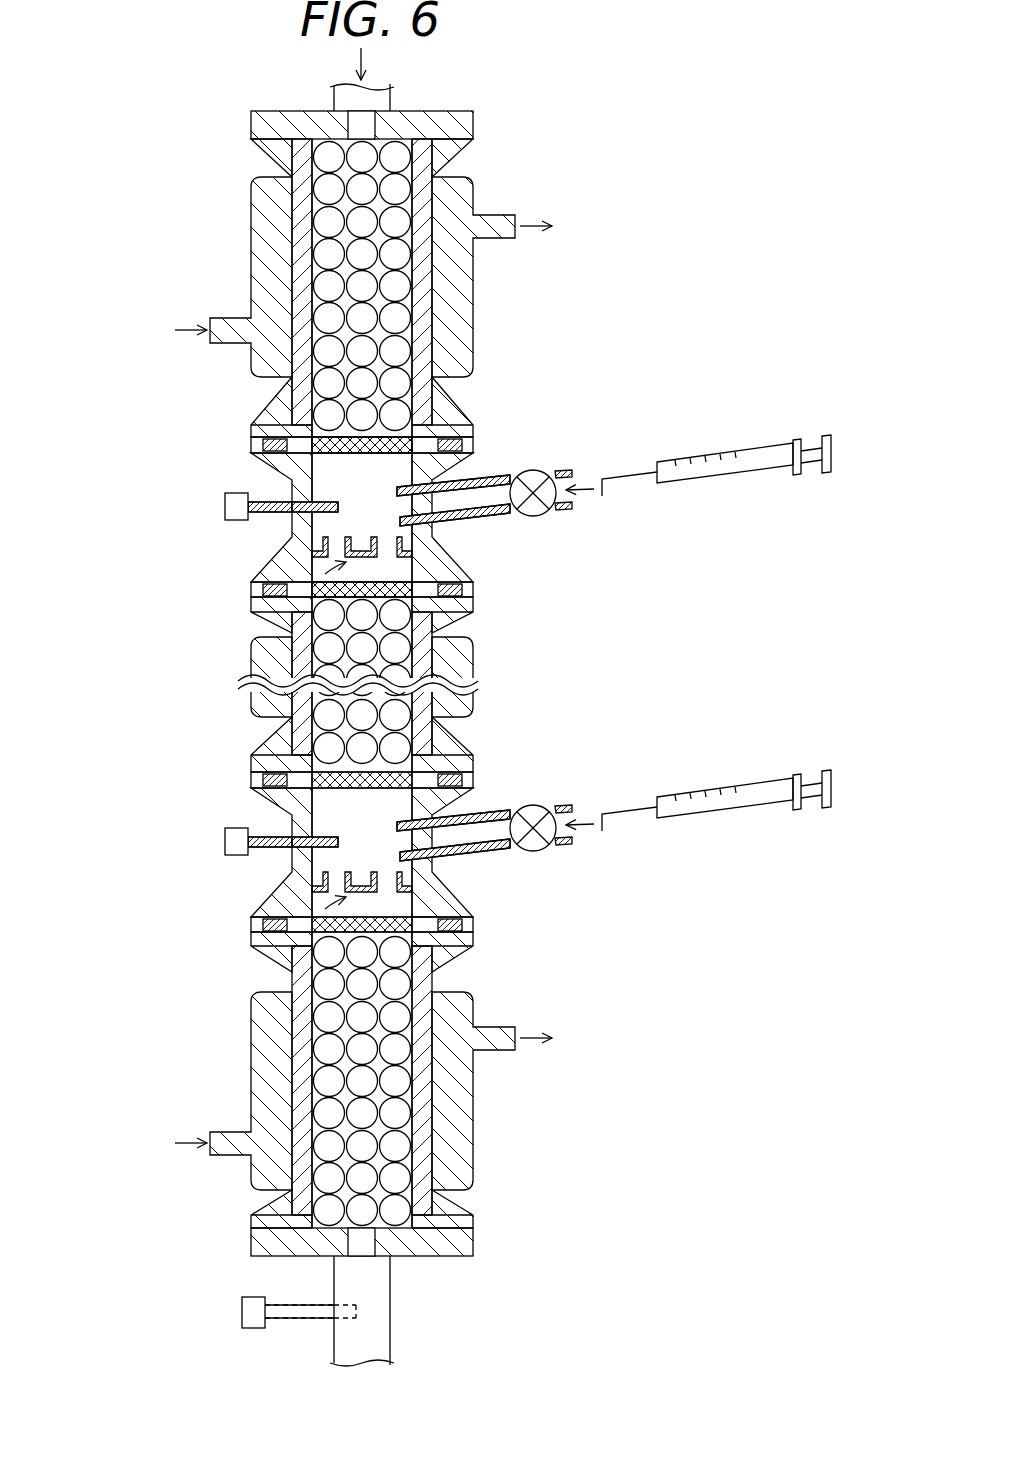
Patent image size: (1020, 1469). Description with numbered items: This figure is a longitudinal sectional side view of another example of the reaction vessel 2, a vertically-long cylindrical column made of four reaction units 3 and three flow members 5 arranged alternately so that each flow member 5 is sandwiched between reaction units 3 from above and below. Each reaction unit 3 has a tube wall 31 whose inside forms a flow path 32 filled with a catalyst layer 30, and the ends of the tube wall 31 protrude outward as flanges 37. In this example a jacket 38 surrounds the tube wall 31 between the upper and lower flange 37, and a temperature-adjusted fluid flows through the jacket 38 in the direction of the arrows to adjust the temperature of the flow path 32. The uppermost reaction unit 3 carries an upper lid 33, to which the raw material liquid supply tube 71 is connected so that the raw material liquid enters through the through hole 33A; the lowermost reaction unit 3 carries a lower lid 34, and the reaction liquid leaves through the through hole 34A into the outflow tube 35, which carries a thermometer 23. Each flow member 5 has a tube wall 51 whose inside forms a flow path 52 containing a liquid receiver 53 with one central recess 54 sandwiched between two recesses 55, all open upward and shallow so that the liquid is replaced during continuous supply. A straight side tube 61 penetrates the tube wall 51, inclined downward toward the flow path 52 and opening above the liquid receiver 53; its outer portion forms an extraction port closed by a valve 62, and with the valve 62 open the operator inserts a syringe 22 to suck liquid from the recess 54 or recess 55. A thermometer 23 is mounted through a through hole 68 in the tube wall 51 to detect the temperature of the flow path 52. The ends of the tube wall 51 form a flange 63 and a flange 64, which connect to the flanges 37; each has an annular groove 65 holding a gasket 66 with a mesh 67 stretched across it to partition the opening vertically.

The reaction vessel 2 is at (562, 912).
The reaction unit 3 is at (158, 276).
The flow member 5 is at (181, 475).
The syringe 22 is at (748, 453).
The thermometer 23 is at (224, 508).
The catalyst layer 30 is at (425, 314).
The tube wall 31 is at (430, 331).
The flow path 32 is at (298, 246).
The upper lid 33 is at (475, 125).
The through hole 33A is at (380, 128).
The lower lid 34 is at (455, 1257).
The through hole 34A is at (364, 1254).
The outflow tube 35 is at (392, 1329).
The flange 37 is at (474, 150).
The jacket 38 is at (474, 256).
The tube wall 51 is at (432, 541).
The flow path 52 is at (293, 491).
The liquid receiver 53 is at (330, 566).
The recess 54 is at (362, 543).
The recess 55 is at (440, 525).
The side tube 61 is at (546, 479).
The valve 62 is at (549, 511).
The flange 63 is at (266, 444).
The flange 64 is at (268, 592).
The annular groove 65 is at (262, 445).
The gasket 66 is at (462, 442).
The mesh 67 is at (298, 466).
The through hole 68 is at (290, 523).
The raw material liquid supply tube 71 is at (393, 98).